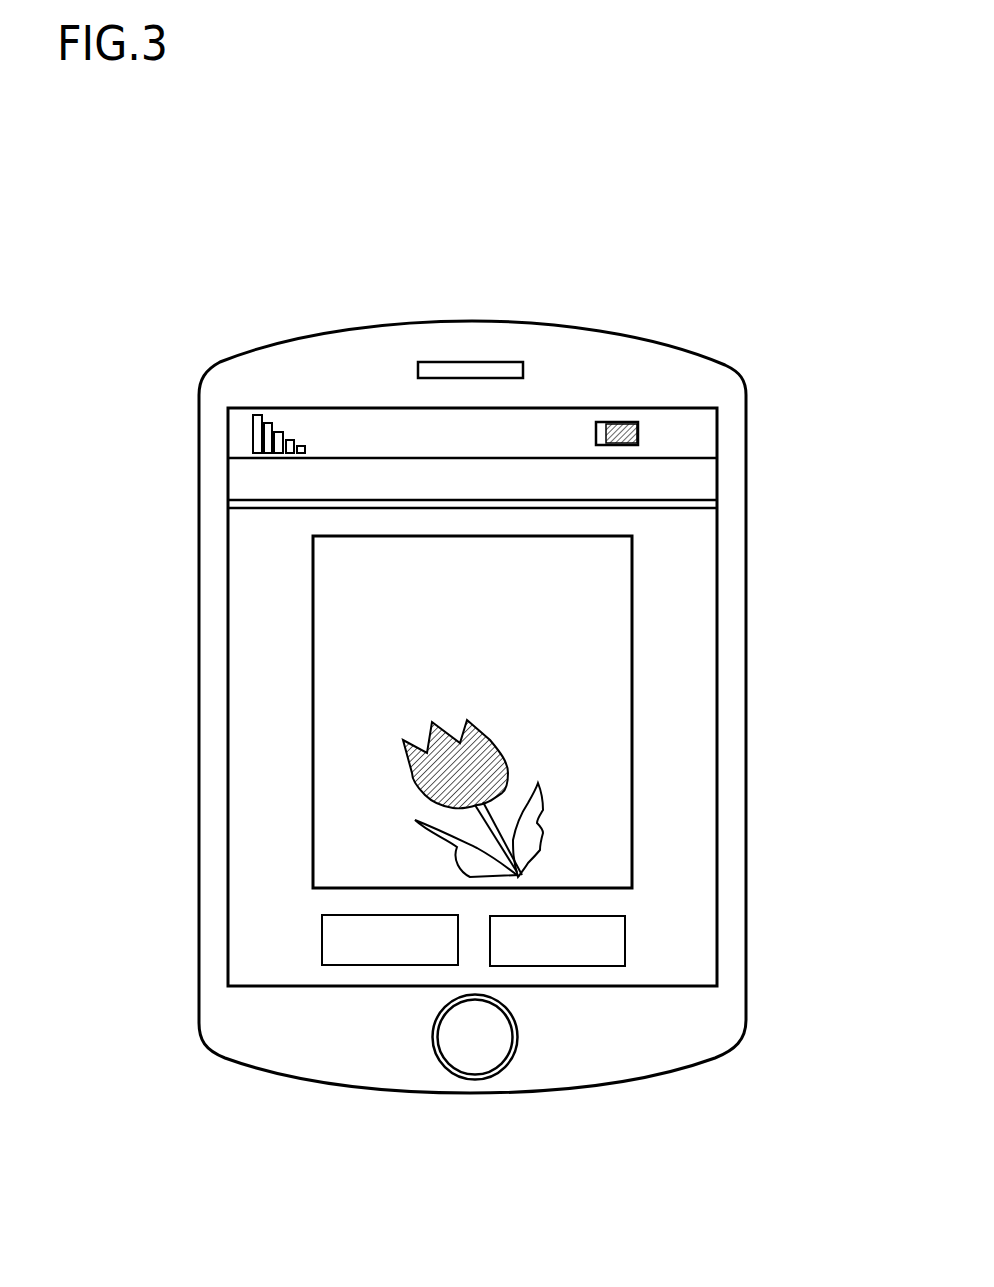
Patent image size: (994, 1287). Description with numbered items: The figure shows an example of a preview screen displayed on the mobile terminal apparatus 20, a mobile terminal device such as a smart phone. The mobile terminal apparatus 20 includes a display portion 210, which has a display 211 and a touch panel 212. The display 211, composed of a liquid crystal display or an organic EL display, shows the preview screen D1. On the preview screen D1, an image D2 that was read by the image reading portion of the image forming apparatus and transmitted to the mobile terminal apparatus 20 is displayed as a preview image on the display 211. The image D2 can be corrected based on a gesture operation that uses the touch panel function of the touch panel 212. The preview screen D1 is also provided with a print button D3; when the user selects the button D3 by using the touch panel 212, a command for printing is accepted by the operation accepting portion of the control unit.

The mobile terminal apparatus 20 is at (512, 662).
The display portion 210 is at (672, 368).
The display 211 is at (697, 408).
The touch panel 212 is at (697, 760).
The preview screen D1 is at (703, 527).
The image D2 is at (610, 647).
The print button D3 is at (380, 955).